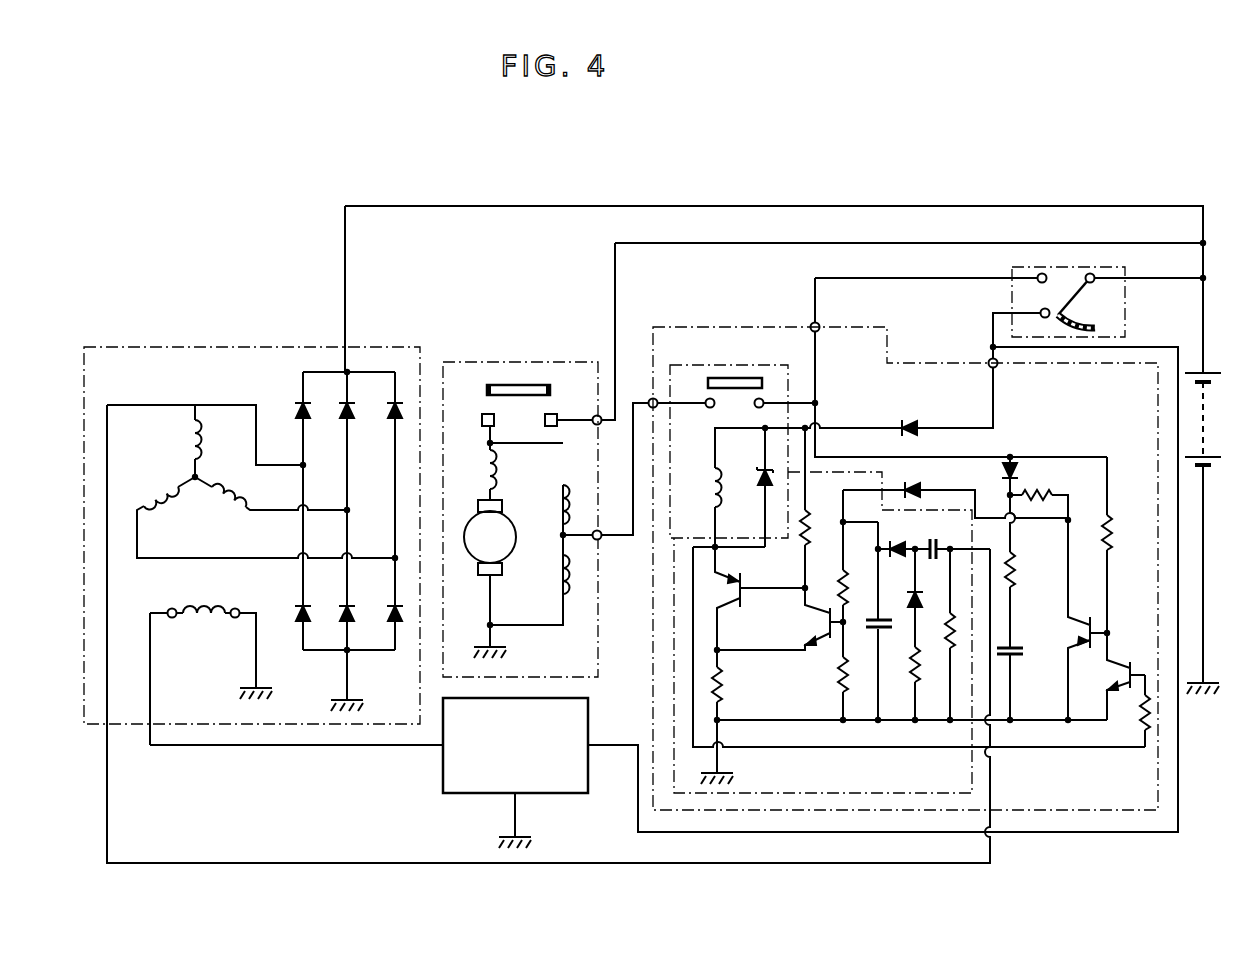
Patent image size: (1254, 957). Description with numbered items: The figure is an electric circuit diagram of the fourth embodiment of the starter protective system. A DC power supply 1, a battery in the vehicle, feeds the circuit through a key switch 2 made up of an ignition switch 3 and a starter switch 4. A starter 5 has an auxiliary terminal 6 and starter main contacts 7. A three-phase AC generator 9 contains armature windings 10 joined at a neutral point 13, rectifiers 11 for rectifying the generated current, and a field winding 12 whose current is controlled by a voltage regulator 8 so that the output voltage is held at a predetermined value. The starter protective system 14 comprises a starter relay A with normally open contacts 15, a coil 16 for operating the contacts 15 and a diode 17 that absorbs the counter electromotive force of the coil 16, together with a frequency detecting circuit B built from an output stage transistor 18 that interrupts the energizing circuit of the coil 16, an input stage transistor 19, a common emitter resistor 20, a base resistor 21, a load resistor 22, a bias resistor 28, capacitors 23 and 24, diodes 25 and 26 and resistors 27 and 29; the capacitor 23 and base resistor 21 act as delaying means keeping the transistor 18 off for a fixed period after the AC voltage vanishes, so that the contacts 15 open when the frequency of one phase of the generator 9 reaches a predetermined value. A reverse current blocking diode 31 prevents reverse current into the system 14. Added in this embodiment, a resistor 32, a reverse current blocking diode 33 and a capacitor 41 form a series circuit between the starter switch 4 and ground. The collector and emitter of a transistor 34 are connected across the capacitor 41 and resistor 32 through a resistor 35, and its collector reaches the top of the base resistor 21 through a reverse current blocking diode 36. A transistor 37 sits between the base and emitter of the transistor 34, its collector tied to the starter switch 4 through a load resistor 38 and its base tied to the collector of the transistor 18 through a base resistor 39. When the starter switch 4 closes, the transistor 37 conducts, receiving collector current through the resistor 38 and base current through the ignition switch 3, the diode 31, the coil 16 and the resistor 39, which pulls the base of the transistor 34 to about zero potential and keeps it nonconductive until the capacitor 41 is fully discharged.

The DC power supply 1 is at (1210, 420).
The key switch 2 is at (1111, 270).
The ignition switch 3 is at (1042, 310).
The starter switch 4 is at (1038, 274).
The starter 5 is at (493, 362).
The auxiliary terminal 6 is at (600, 540).
The starter main contacts 7 is at (530, 385).
The voltage regulator 8 is at (434, 777).
The generator 9 is at (197, 347).
The armature windings 10 is at (188, 441).
The rectifiers 11 is at (300, 390).
The field winding 12 is at (206, 620).
The neutral point 13 is at (192, 476).
The starter protective system 14 is at (809, 329).
The normally open contacts 15 is at (745, 378).
The coil 16 is at (716, 489).
The diode 17 is at (759, 472).
The output stage transistor 18 is at (739, 582).
The input stage transistor 19 is at (803, 623).
The common emitter resistor 20 is at (724, 687).
The base resistor 21 is at (848, 568).
The load resistor 22 is at (809, 516).
The capacitor 23 is at (866, 622).
The capacitor 24 is at (934, 543).
The diode 25 is at (891, 545).
The diode 26 is at (920, 604).
The resistor 27 is at (903, 676).
The bias resistor 28 is at (836, 680).
The resistor 29 is at (946, 658).
The reverse current blocking diode 31 is at (906, 422).
The resistor 32 is at (1020, 560).
The reverse current blocking diode 33 is at (1014, 468).
The transistor 34 is at (1074, 633).
The resistor 35 is at (1048, 492).
The reverse current blocking diode 36 is at (923, 487).
The transistor 37 is at (1116, 680).
The load resistor 38 is at (1111, 526).
The base resistor 39 is at (1140, 717).
The capacitor 41 is at (1020, 654).